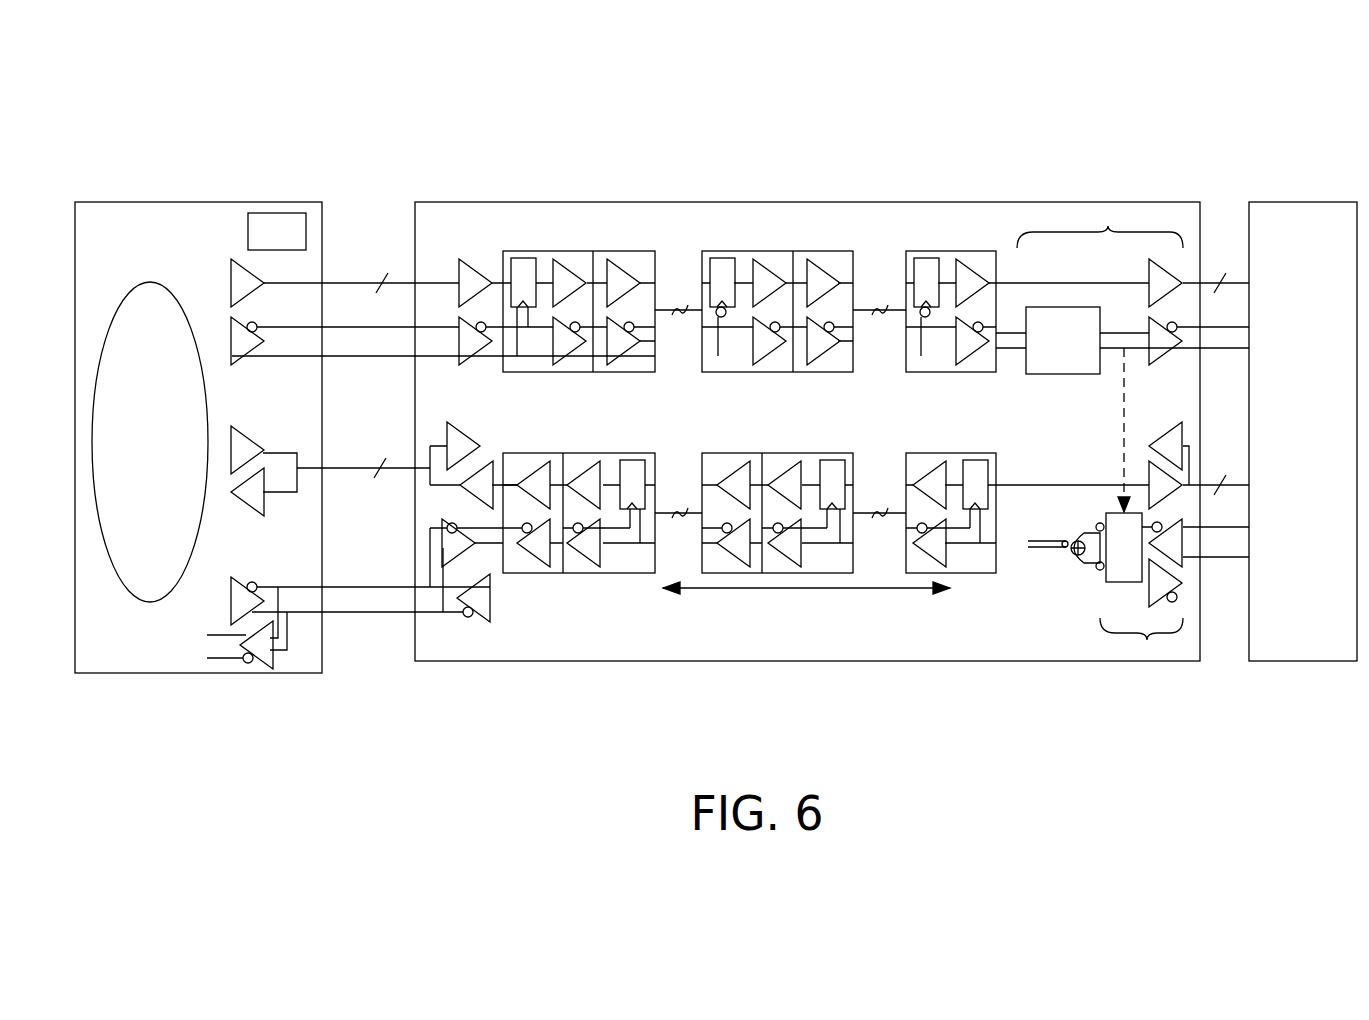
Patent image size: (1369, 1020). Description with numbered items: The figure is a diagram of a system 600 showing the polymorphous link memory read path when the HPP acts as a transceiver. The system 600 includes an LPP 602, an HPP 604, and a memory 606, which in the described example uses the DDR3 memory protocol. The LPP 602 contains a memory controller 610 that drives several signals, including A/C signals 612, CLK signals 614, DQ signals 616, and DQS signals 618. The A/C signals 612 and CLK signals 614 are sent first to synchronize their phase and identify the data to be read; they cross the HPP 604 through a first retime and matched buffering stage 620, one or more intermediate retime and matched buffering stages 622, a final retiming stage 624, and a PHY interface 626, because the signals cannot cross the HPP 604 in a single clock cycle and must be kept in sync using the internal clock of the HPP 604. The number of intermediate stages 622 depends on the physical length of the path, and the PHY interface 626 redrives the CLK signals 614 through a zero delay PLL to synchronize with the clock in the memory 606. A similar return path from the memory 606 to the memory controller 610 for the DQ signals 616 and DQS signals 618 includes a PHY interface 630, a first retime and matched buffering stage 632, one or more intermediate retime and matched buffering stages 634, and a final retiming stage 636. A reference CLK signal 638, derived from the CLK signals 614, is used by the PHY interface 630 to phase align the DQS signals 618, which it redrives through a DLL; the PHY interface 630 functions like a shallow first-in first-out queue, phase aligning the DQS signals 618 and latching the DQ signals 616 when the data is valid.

The system 600 is at (96, 79).
The LPP 602 is at (190, 202).
The HPP 604 is at (676, 203).
The memory 606 is at (1313, 661).
The memory controller 610 is at (108, 332).
The A/C signals 612 is at (364, 253).
The CLK signals 614 is at (370, 357).
The DQ signals 616 is at (355, 470).
The DQS signals 618 is at (376, 614).
The first retime and matched buffering stage 620 is at (542, 251).
The intermediate retime and matched buffering stages 622 is at (825, 251).
The final retiming stage 624 is at (945, 251).
The PHY interface 626 is at (1108, 226).
The PHY interface 630 is at (1147, 640).
The first retime and matched buffering stage 632 is at (980, 573).
The intermediate retime and matched buffering stages 634 is at (853, 560).
The final retiming stage 636 is at (540, 573).
The reference CLK signal 638 is at (1090, 430).